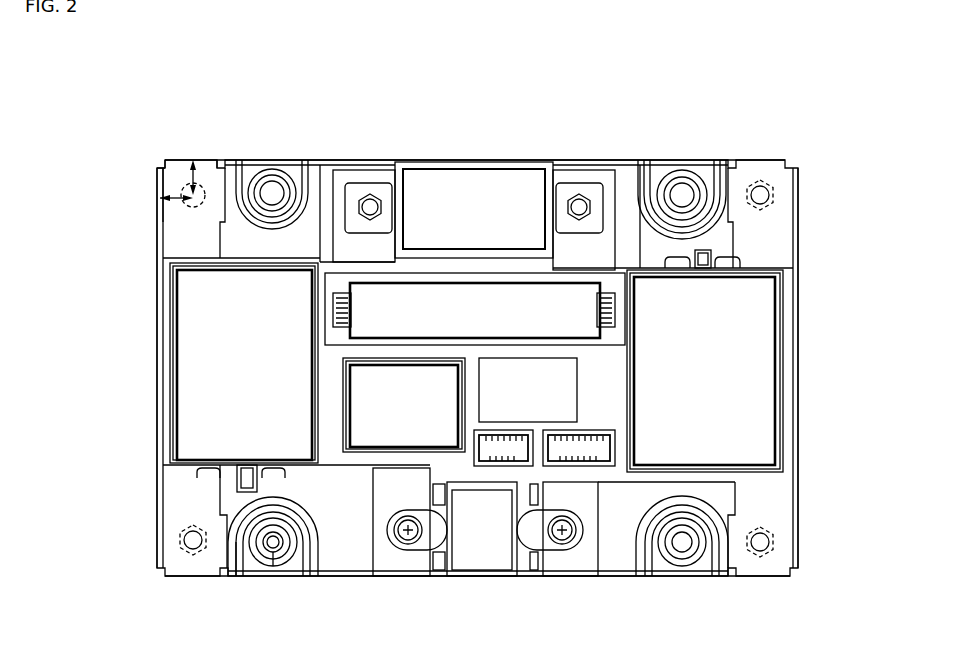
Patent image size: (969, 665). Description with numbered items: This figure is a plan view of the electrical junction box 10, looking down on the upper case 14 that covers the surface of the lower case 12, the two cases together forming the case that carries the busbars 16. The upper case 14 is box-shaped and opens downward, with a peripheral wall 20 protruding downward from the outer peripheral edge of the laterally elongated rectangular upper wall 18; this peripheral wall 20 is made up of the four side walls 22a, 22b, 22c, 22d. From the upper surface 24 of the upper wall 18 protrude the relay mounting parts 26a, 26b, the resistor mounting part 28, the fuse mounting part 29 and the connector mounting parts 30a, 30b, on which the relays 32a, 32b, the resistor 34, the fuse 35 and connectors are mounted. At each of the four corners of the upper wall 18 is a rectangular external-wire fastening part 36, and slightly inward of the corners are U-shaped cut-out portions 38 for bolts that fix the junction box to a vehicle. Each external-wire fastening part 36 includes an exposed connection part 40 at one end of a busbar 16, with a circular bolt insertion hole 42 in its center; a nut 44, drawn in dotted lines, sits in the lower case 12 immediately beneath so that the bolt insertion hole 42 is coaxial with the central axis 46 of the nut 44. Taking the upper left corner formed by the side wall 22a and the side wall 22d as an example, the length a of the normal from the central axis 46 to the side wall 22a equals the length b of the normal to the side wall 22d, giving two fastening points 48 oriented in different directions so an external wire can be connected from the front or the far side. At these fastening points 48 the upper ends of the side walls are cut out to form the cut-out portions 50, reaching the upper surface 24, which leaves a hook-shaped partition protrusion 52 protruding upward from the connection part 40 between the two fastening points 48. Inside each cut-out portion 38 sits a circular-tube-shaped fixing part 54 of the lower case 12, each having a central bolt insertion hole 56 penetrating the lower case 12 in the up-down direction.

The electrical junction box 10 is at (487, 56).
The lower case 12 is at (298, 565).
The upper case 14 is at (453, 576).
The busbars 16 is at (194, 462).
The upper wall 18 is at (611, 380).
The peripheral wall 20 is at (157, 326).
The side wall 22a is at (157, 277).
The side wall 22b is at (590, 576).
The side wall 22c is at (798, 388).
The side wall 22d is at (236, 160).
The upper surface 24 is at (608, 405).
The relay mounting part 26a is at (173, 351).
The relay mounting part 26b is at (437, 358).
The resistor mounting part 28 is at (493, 338).
The fuse mounting part 29 is at (404, 170).
The connector mounting part 30a is at (485, 461).
The connector mounting part 30b is at (613, 452).
The relay 32a is at (200, 413).
The relay 32b is at (373, 407).
The resistor 34 is at (373, 313).
The fuse 35 is at (467, 210).
The external-wire fastening part 36 is at (190, 160).
The cut-out portion 38 is at (232, 556).
The connection part 40 is at (176, 220).
The bolt insertion hole 42 is at (198, 205).
The nut 44 is at (190, 212).
The central axis 46 is at (212, 208).
The fastening points 48 is at (197, 160).
The cut-out portions 50 is at (192, 158).
The partition protrusion 52 is at (160, 166).
The fixing part 54 is at (273, 562).
The bolt insertion hole 56 is at (274, 545).
The length of normal a is at (175, 201).
The length of normal b is at (196, 178).